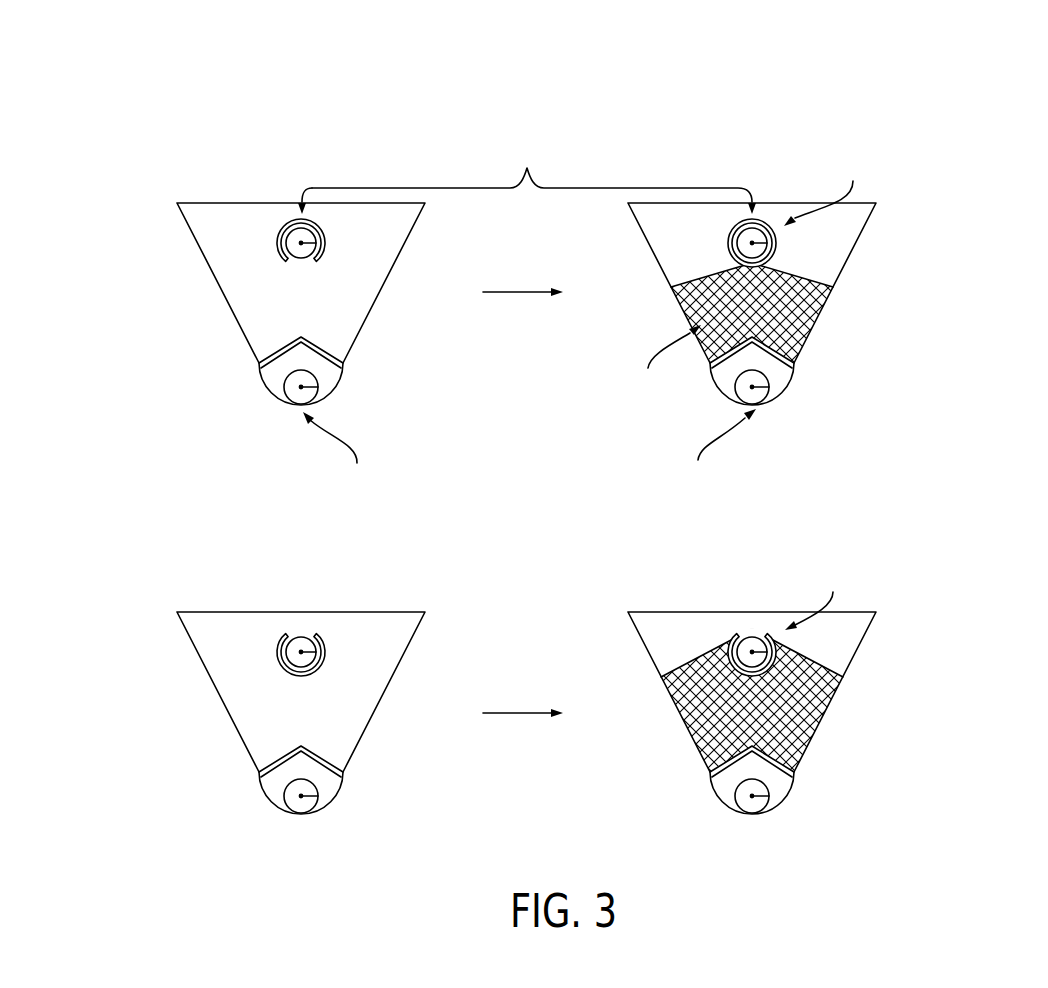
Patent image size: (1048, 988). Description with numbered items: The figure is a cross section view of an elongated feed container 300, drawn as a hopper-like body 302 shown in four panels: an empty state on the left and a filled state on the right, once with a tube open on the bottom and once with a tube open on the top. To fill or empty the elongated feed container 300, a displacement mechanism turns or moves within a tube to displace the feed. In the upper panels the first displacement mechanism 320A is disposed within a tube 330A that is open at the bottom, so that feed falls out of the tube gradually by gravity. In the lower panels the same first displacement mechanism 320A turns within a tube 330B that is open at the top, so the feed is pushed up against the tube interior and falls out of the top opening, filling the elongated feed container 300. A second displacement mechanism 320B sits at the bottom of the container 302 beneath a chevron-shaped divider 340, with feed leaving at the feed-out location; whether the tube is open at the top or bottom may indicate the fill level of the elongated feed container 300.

The elongated feed container 300 is at (990, 80).
The hopper 302 is at (230, 312).
The first displacement mechanism 320A is at (294, 237).
The lower feed tube 320B is at (303, 395).
The tube 330A is at (325, 231).
The tube 330B is at (325, 653).
The chevron divider 340 is at (343, 363).